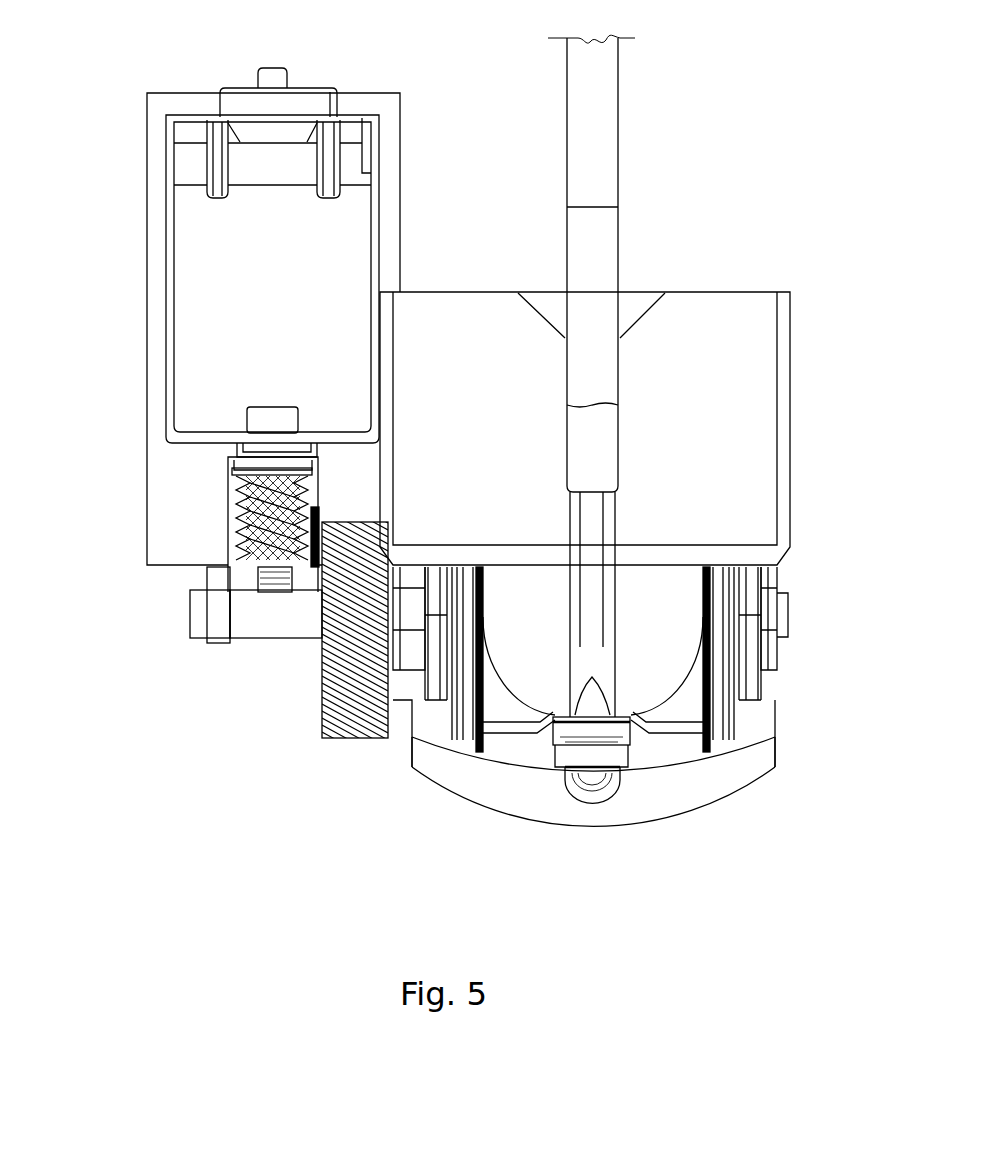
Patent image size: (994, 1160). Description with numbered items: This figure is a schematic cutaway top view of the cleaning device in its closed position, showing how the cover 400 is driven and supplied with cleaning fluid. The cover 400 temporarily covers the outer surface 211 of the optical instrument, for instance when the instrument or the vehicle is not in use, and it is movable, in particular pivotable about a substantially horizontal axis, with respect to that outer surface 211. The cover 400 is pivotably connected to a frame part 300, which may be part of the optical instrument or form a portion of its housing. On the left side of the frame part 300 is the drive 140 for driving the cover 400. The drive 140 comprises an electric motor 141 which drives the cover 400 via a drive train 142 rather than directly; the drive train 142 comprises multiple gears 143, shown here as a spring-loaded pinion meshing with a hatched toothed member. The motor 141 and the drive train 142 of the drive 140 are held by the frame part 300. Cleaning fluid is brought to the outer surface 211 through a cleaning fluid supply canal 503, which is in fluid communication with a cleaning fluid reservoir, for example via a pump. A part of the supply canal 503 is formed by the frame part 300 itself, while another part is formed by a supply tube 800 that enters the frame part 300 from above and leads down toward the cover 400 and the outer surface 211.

The drive 140 is at (182, 678).
The electric motor 141 is at (212, 337).
The drive train 142 is at (143, 602).
The gears 143 is at (303, 560).
The supply tube 800 is at (600, 257).
The frame part 300 is at (743, 383).
The cleaning fluid supply canal 503 is at (607, 520).
The cover 400 is at (685, 793).
The outer surface 211 is at (597, 780).